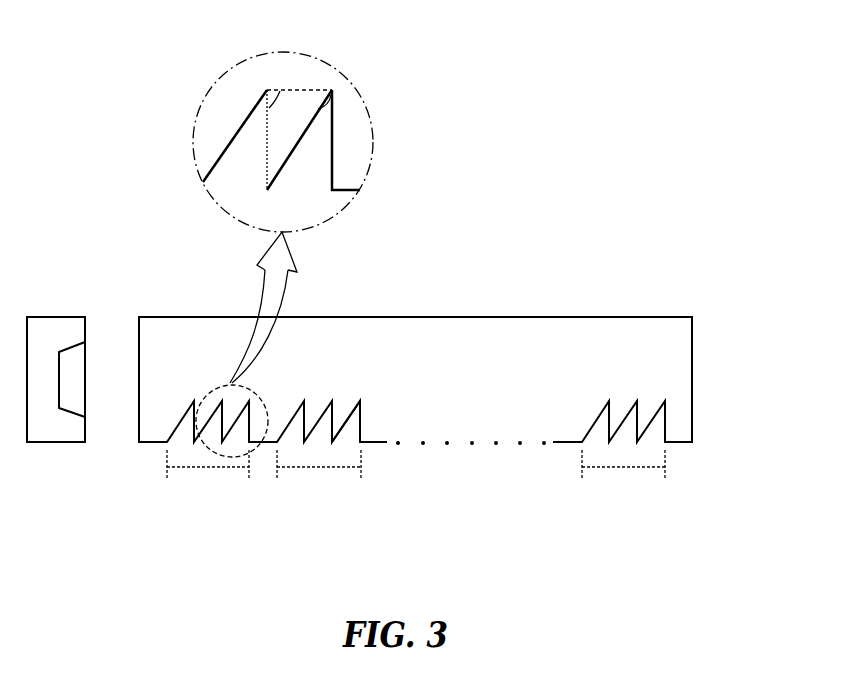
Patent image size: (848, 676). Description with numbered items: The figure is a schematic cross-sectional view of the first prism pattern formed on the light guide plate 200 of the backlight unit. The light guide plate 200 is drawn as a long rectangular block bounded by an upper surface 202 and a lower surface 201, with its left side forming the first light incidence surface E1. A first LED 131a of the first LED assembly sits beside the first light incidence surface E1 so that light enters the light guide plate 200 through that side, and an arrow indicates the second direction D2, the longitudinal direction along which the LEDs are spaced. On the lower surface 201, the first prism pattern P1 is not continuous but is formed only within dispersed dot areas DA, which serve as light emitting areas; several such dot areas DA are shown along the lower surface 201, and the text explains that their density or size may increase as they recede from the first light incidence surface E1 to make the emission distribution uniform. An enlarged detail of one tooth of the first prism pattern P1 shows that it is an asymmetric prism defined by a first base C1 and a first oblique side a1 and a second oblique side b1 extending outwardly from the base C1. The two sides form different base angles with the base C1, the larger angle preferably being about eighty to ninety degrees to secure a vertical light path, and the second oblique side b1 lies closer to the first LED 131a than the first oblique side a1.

The first LED 131a is at (53, 317).
The light guide plate 200 is at (693, 377).
The upper surface of the light guide plate 202 is at (657, 317).
The lower surface of the light guide plate 201 is at (685, 443).
The first light incidence surface E1 is at (139, 418).
The first prism pattern P1 is at (351, 449).
The dot area DA is at (416, 473).
The second direction D2 is at (48, 533).
The first base C1 is at (283, 231).
The first oblique side a1 is at (299, 140).
The second oblique side b1 is at (256, 140).